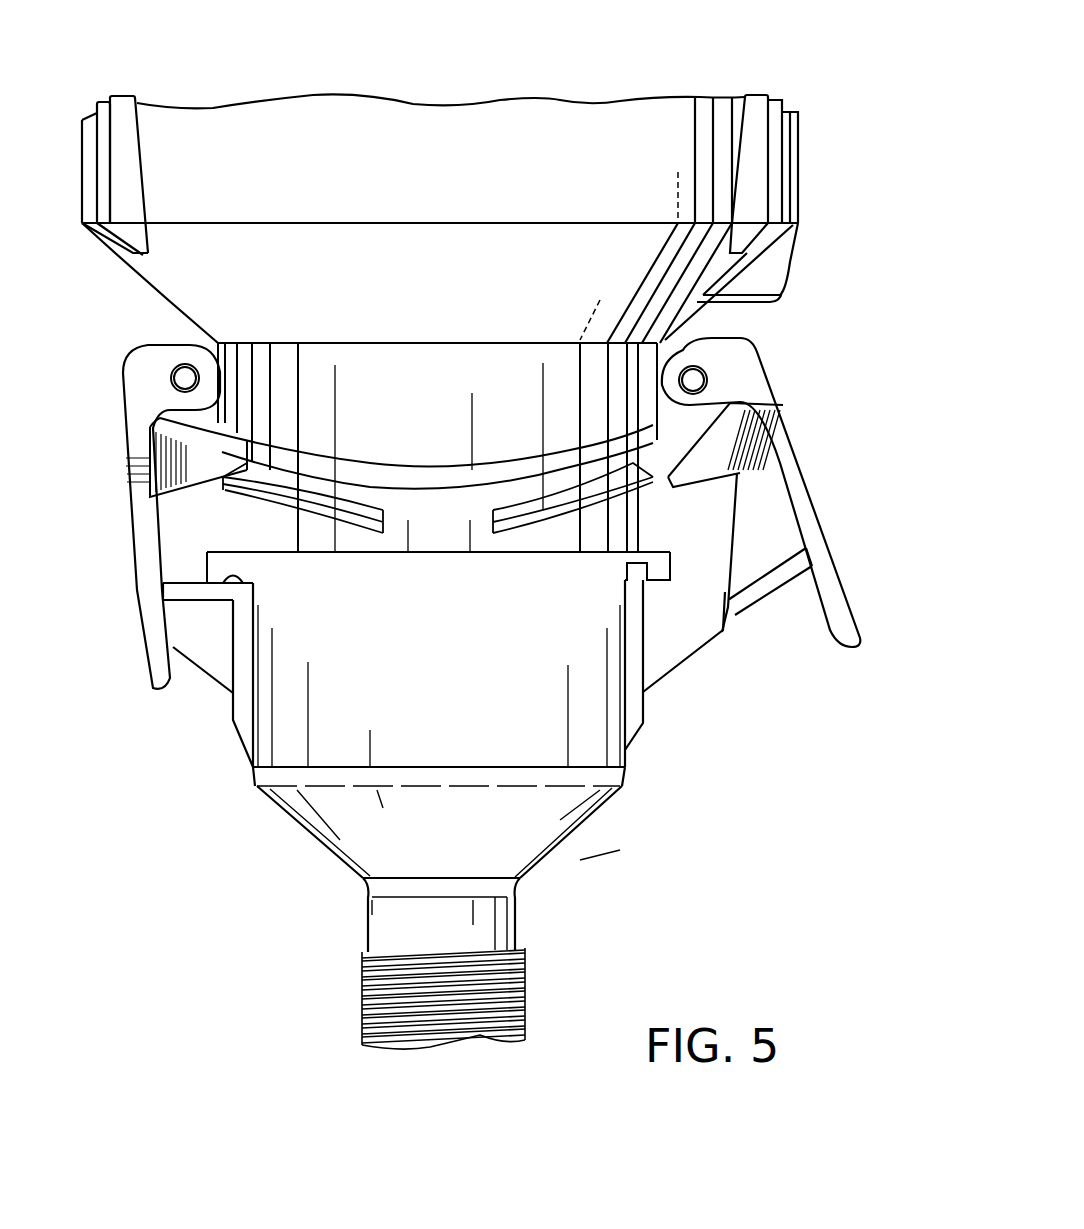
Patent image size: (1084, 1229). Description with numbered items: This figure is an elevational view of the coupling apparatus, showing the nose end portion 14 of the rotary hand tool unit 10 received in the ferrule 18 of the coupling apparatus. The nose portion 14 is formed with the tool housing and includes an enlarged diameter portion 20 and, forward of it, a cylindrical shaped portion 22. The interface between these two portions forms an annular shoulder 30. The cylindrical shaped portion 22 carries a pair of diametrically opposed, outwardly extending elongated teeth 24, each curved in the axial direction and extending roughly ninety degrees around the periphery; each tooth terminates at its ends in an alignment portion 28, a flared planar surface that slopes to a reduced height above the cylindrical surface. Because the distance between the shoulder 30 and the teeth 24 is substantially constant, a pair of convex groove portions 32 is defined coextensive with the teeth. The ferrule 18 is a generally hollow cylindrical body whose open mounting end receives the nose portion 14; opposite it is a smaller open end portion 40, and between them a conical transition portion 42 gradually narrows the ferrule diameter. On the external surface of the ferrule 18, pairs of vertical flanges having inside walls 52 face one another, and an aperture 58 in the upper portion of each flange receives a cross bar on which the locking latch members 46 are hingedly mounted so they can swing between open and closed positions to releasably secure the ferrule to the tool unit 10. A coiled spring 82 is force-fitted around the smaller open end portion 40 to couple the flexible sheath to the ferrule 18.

The rotary hand tool unit 10 is at (706, 40).
The nose end portion 14 is at (626, 396).
The ferrule 18 is at (165, 722).
The enlarged diameter portion 20 is at (158, 440).
The cylindrical shaped portion 22 is at (260, 537).
The elongated teeth 24 is at (322, 520).
The alignment portion 28 is at (368, 530).
The annular shoulder 30 is at (400, 477).
The convex groove portions 32 is at (155, 511).
The smaller open end portion 40 is at (517, 923).
The conical transition portion 42 is at (577, 837).
The locking latch members 46 is at (843, 570).
The inside walls 52 is at (213, 645).
The aperture 58 is at (172, 378).
The coiled spring 82 is at (360, 1000).